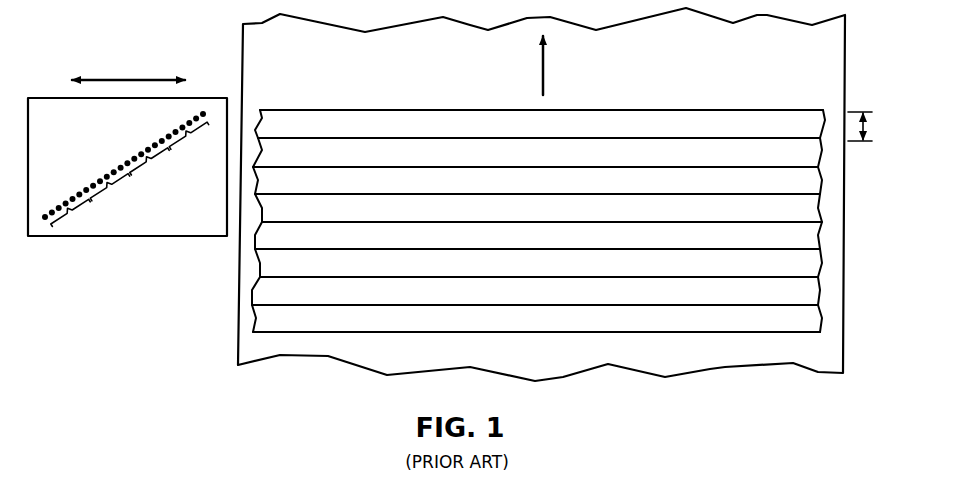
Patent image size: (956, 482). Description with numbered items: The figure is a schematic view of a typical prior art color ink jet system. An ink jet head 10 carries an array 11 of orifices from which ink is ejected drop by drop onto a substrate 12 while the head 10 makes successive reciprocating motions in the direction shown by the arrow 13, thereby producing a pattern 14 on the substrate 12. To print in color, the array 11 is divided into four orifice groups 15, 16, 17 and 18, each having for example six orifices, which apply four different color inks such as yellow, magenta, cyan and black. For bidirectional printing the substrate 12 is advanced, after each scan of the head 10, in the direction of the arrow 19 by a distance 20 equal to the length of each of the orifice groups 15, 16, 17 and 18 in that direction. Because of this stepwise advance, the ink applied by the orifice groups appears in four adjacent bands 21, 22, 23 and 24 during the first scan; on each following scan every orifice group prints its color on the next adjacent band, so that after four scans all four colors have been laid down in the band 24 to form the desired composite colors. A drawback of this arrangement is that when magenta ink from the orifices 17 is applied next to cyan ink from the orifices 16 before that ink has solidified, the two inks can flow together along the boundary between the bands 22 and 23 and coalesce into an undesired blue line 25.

The ink jet head 10 is at (114, 245).
The array of orifices 11 is at (121, 151).
The substrate 12 is at (243, 343).
The arrow indicating direction of head motion 13 is at (773, 105).
The pattern 14 is at (130, 77).
The orifice group 15 is at (194, 139).
The orifice group 16 is at (154, 165).
The orifice group 17 is at (113, 191).
The orifice group 18 is at (74, 217).
The arrow indicating direction of substrate advance 19 is at (546, 70).
The distance 20 is at (868, 126).
The band 21 is at (287, 120).
The band 22 is at (337, 147).
The band 23 is at (390, 175).
The band 24 is at (443, 204).
The undesired blue line 25 is at (643, 167).